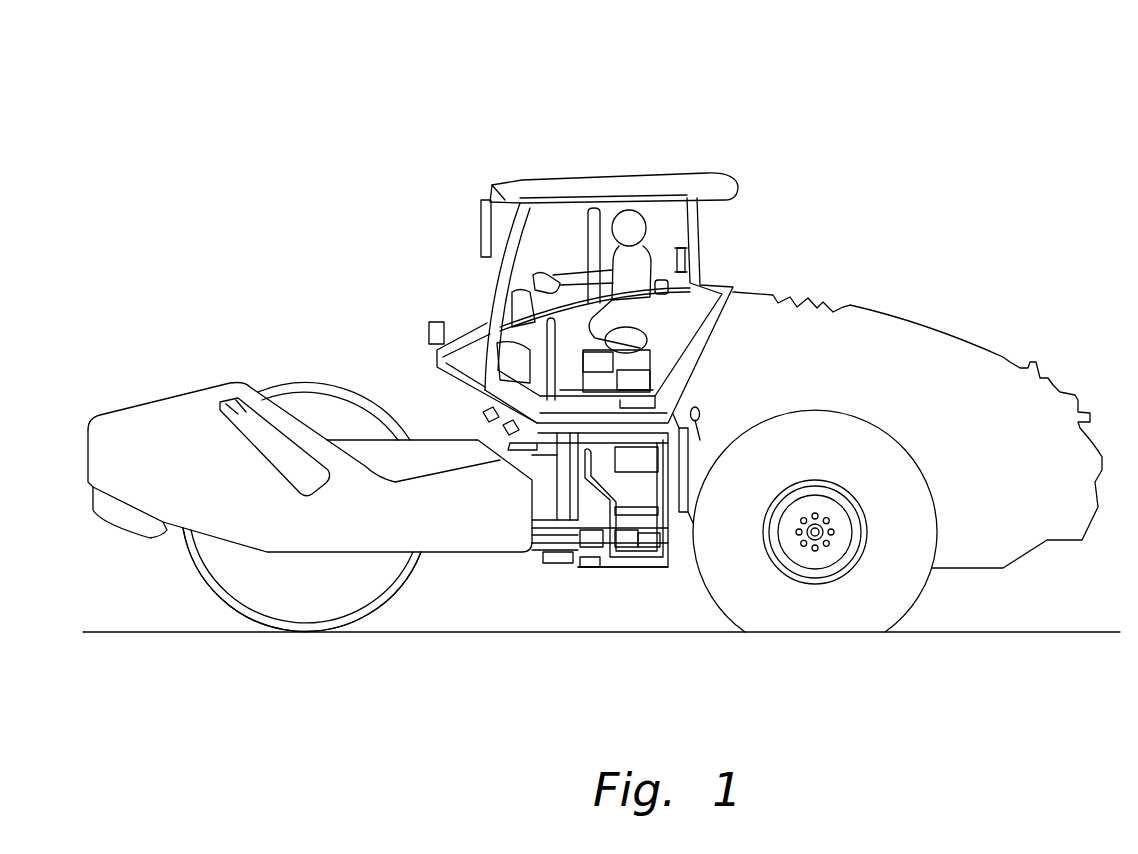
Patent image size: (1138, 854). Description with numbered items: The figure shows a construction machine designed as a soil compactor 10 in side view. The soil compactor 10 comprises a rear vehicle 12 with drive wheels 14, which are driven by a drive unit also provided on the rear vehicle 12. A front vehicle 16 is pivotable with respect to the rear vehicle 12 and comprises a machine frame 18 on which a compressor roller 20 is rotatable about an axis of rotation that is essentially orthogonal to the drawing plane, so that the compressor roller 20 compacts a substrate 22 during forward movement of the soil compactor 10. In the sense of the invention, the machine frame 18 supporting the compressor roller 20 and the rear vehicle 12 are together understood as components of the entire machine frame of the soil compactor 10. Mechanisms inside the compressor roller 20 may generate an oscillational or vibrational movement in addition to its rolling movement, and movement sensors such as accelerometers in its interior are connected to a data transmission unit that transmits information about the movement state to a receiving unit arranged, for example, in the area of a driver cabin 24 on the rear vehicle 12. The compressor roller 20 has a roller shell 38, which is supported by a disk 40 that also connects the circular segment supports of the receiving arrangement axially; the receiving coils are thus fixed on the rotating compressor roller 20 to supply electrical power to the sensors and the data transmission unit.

The soil compactor 10 is at (843, 147).
The rear vehicle 12 is at (935, 293).
The drive wheels 14 is at (907, 585).
The front vehicle 16 is at (323, 310).
The machine frame 18 is at (325, 525).
The compressor roller 20 is at (268, 388).
The substrate 22 is at (113, 628).
The driver cabin 24 is at (602, 180).
The roller shell 38 is at (240, 613).
The disk 40 is at (330, 407).